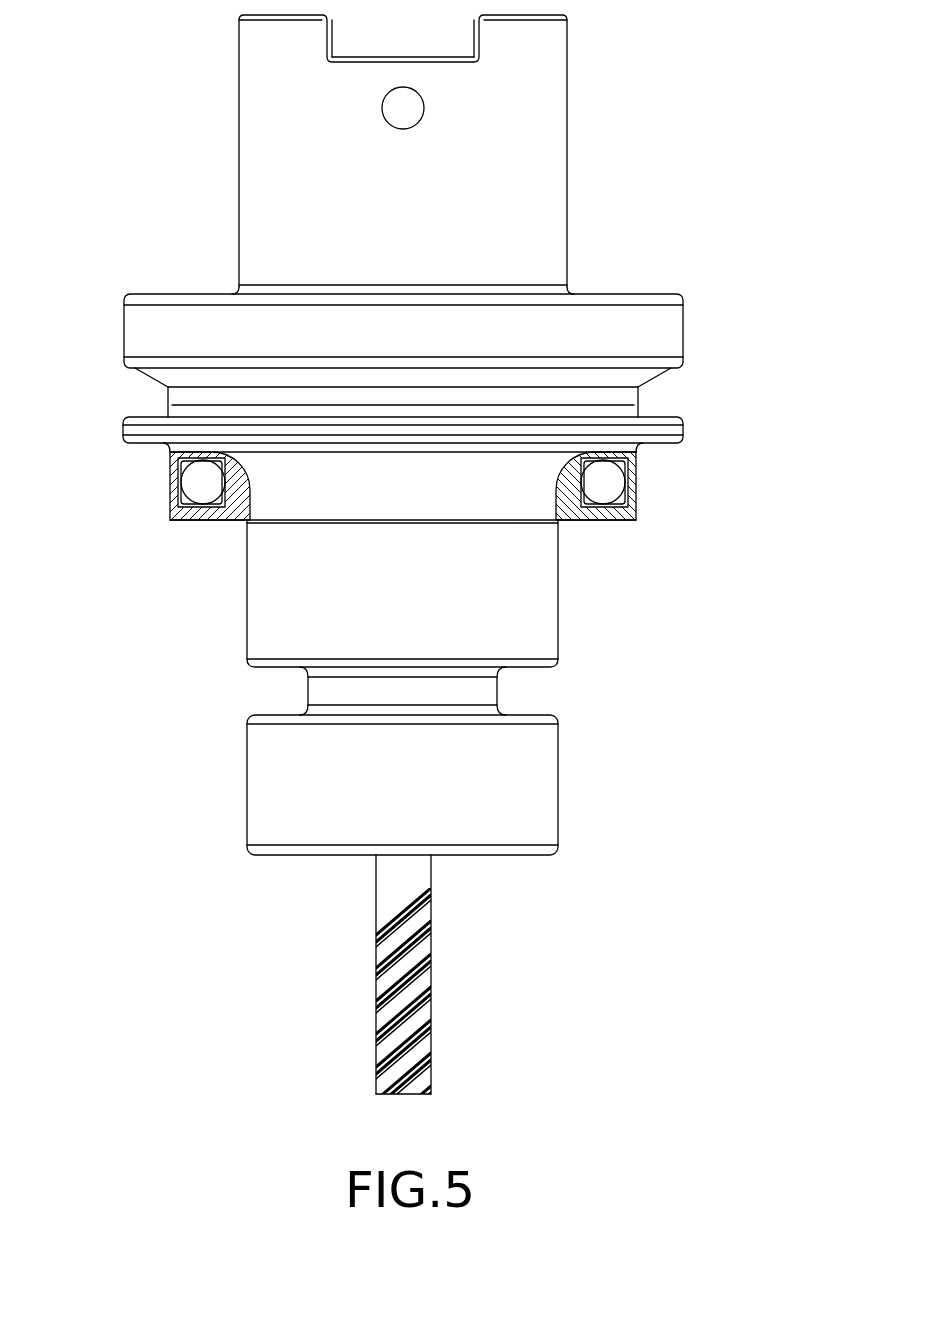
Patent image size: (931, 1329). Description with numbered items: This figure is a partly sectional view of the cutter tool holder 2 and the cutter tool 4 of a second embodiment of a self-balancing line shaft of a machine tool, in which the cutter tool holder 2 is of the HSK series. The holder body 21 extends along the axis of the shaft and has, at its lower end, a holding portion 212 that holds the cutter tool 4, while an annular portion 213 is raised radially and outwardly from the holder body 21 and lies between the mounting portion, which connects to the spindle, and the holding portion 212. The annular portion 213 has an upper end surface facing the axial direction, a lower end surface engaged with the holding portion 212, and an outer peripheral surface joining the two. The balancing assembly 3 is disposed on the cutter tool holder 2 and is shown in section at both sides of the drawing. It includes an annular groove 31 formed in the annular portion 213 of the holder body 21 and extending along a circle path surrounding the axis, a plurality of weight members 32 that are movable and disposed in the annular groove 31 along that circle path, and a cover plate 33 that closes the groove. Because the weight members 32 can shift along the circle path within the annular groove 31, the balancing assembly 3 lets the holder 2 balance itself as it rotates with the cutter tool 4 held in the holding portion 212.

The cutter tool holder 2 is at (465, 435).
The holder body 21 is at (567, 237).
The holding portion 212 is at (437, 364).
The annular portion 213 is at (683, 332).
The balancing assembly 3 is at (403, 535).
The annular groove 31 is at (182, 502).
The weight members 32 is at (203, 482).
The cover plate 33 is at (200, 513).
The cutter tool 4 is at (432, 972).